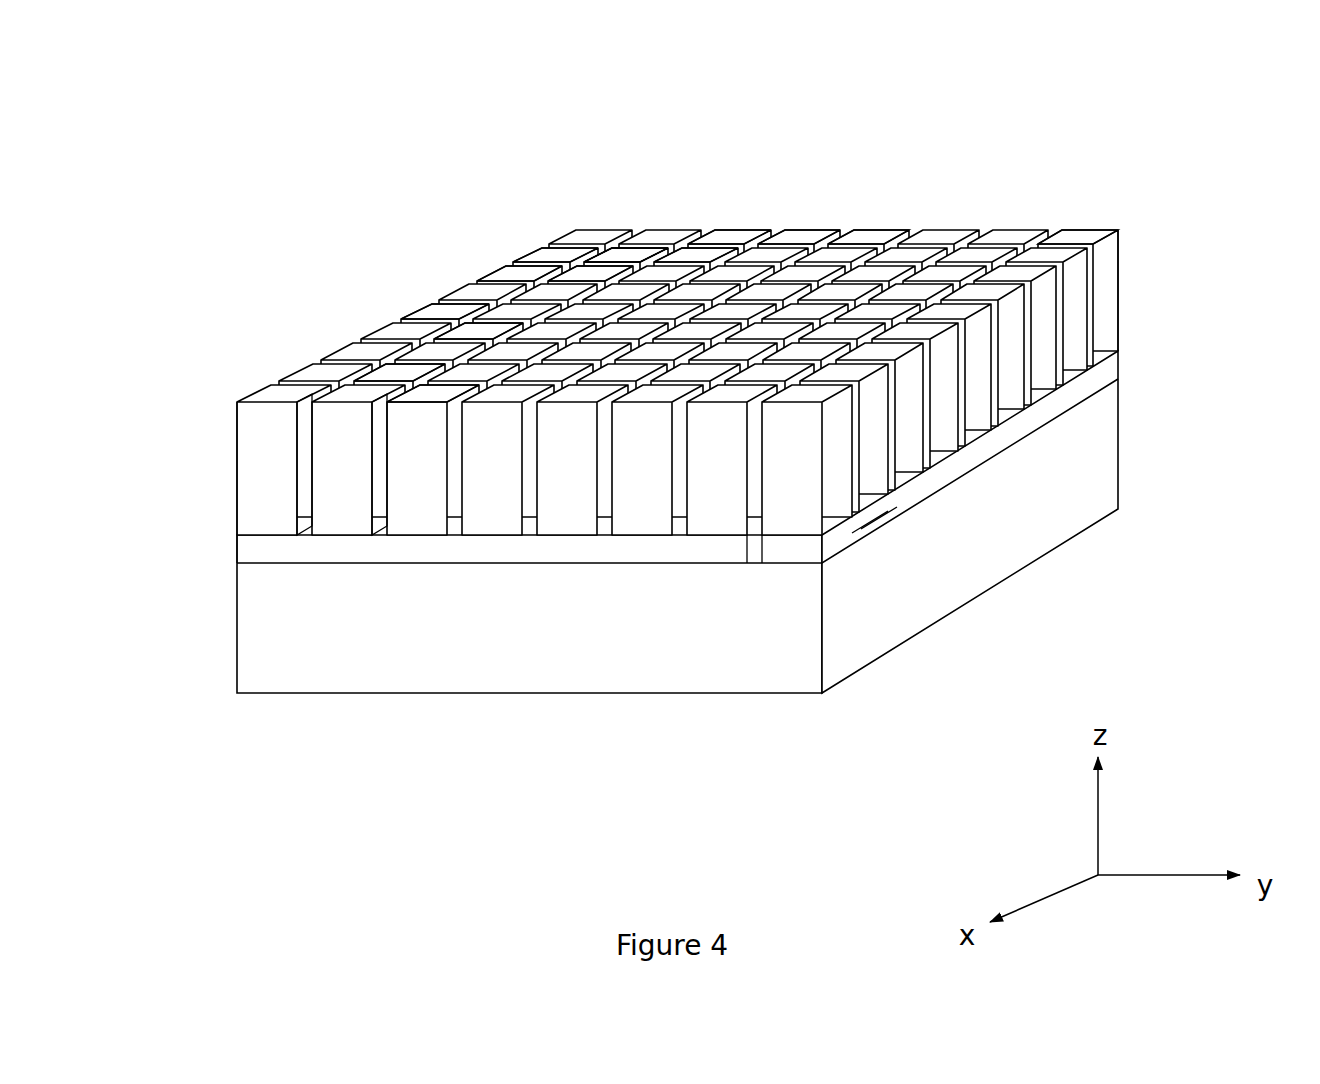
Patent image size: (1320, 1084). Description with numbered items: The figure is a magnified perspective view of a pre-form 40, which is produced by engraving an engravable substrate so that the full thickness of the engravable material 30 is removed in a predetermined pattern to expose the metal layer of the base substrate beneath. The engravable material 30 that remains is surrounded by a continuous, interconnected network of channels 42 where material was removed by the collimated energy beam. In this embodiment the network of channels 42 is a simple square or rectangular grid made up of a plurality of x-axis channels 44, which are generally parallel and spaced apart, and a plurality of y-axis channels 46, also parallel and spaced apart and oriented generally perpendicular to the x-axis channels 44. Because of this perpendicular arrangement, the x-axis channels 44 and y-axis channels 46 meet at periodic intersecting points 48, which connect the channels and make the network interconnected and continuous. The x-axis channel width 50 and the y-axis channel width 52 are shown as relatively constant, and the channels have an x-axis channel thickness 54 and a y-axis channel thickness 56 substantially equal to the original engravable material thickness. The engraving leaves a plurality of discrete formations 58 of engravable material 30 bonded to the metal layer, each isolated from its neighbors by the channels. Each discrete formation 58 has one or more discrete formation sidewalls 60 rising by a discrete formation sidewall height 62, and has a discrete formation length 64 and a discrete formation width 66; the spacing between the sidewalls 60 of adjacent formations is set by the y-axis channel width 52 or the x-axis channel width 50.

The engravable material 30 is at (273, 450).
The pre-form 40 is at (1178, 136).
The continuous interconnected network of channels 42 is at (488, 323).
The x-axis channels 44 is at (838, 227).
The y-axis channels 46 is at (543, 258).
The intersecting points 48 is at (643, 263).
The x-axis channel width 50 is at (708, 550).
The y-axis channel width 52 is at (884, 503).
The x-axis channel thickness 54 is at (217, 547).
The y-axis channel thickness 56 is at (217, 403).
The discrete formations 58 is at (565, 495).
The discrete formation sidewall 60 is at (380, 487).
The discrete formation sidewall height 62 is at (1128, 230).
The discrete formation length 64 is at (347, 320).
The discrete formation width 66 is at (1190, 213).